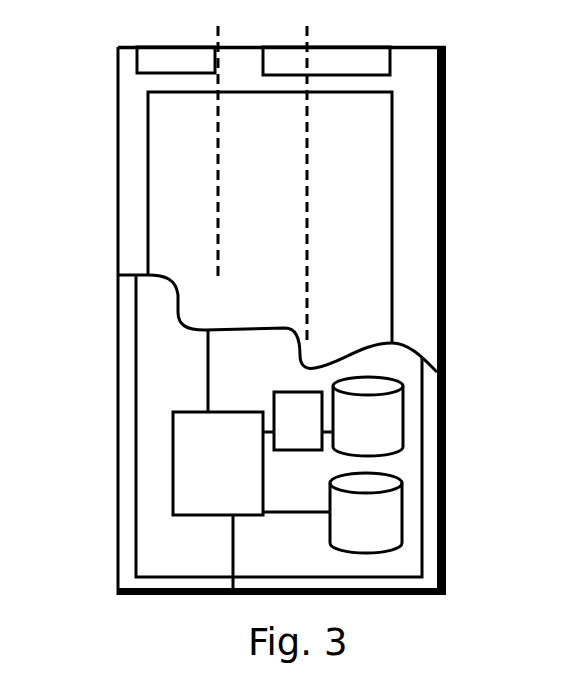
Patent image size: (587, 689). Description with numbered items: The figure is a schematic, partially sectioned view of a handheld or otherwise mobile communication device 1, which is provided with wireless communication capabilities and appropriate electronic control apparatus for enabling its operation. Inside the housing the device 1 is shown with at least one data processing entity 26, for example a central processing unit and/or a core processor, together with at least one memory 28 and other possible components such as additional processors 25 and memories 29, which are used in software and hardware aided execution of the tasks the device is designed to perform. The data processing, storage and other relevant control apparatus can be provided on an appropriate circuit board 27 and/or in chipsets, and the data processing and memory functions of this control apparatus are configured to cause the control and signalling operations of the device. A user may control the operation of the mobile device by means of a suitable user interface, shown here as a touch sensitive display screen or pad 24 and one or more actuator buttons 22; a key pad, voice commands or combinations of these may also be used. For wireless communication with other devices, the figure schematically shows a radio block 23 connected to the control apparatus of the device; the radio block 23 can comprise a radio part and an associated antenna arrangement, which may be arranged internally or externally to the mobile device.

The mobile communication device 1 is at (135, 117).
The actuator buttons 22 is at (148, 47).
The radio block 23 is at (377, 58).
The touch sensitive display screen or pad 24 is at (193, 217).
The additional processors 25 is at (299, 412).
The data processing entity 26 is at (195, 456).
The circuit board 27 is at (193, 542).
The memory 28 is at (378, 432).
The memories 29 is at (378, 512).